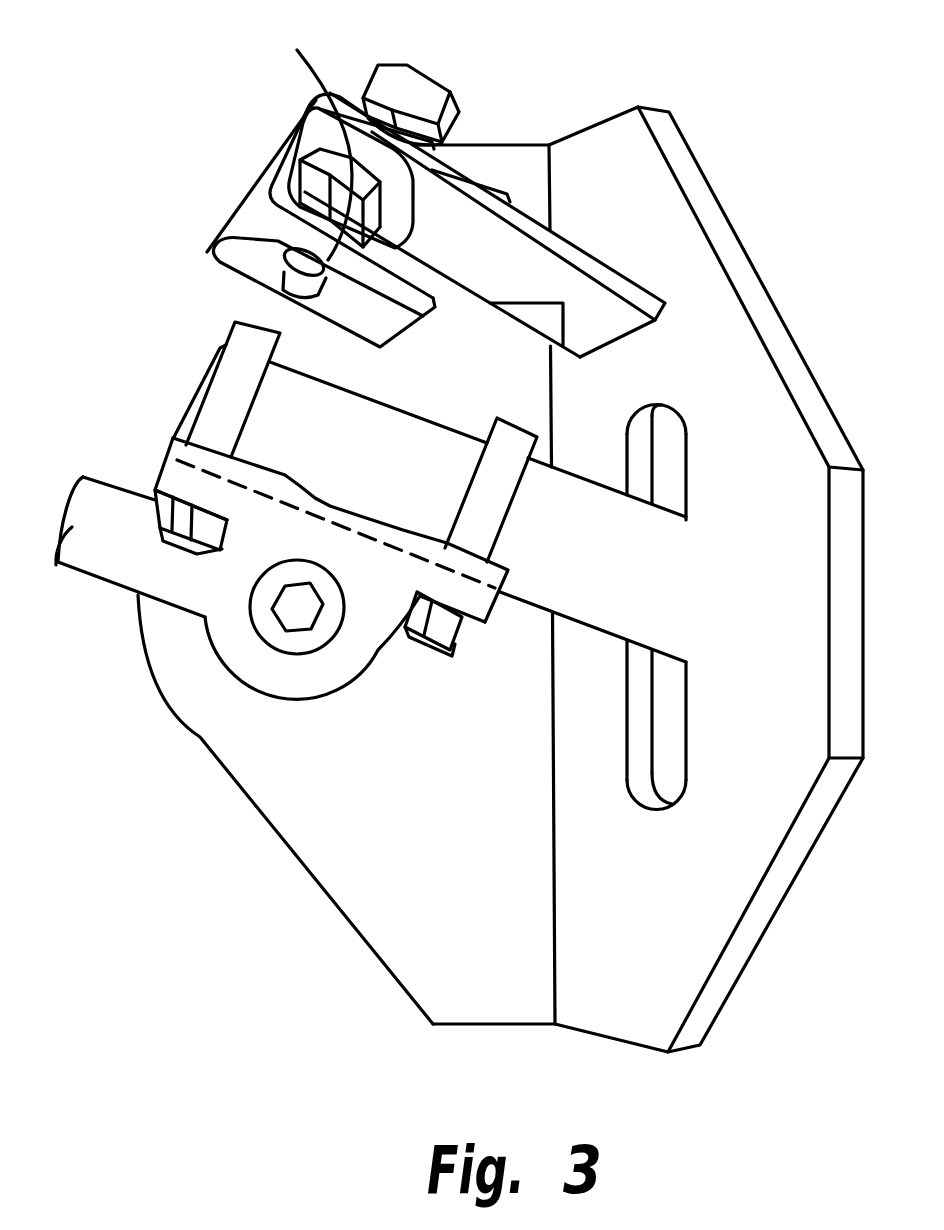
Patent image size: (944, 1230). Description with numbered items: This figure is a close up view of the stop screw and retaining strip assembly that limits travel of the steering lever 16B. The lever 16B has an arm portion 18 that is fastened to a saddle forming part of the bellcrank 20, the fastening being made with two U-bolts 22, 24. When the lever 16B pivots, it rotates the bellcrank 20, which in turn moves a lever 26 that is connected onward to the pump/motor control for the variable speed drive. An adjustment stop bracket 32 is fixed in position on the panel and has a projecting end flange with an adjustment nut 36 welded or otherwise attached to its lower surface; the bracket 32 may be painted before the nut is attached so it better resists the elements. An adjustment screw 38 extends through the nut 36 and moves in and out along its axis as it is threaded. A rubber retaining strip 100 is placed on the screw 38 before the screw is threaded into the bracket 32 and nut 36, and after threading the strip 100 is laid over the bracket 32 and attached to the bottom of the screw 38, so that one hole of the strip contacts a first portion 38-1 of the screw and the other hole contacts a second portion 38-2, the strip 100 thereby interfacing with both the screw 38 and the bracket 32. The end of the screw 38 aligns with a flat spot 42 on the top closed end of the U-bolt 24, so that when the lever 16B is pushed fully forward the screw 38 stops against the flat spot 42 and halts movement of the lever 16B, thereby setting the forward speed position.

The lever 16B is at (657, 573).
The rubber retaining strip 100 is at (253, 203).
The adjustment stop bracket 32 is at (313, 143).
The adjustment nut 36 is at (300, 173).
The first portion of screw 38-1 is at (302, 140).
The adjustment screw 38 is at (431, 77).
The second portion of screw 38-2 is at (237, 233).
The flat spot 42 is at (257, 327).
The U-bolt 24 is at (230, 403).
The U-bolt 22 is at (480, 493).
The arm portion 18 is at (337, 420).
The lever 26 is at (160, 467).
The bellcrank 20 is at (123, 583).